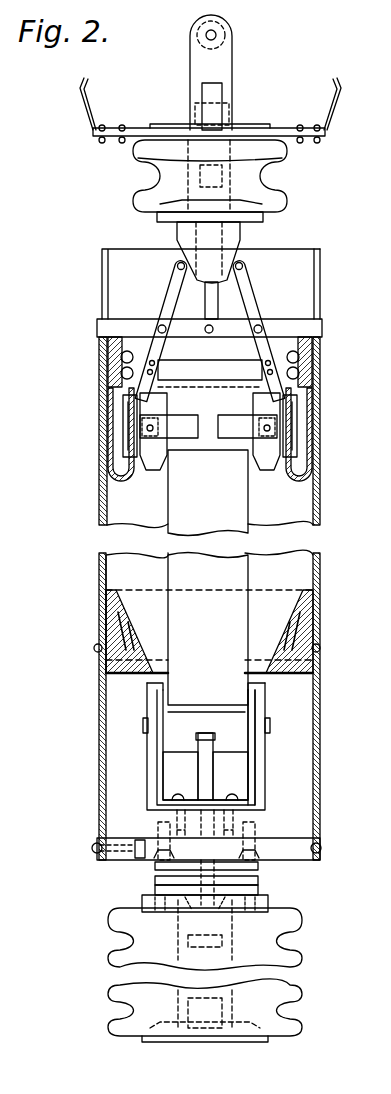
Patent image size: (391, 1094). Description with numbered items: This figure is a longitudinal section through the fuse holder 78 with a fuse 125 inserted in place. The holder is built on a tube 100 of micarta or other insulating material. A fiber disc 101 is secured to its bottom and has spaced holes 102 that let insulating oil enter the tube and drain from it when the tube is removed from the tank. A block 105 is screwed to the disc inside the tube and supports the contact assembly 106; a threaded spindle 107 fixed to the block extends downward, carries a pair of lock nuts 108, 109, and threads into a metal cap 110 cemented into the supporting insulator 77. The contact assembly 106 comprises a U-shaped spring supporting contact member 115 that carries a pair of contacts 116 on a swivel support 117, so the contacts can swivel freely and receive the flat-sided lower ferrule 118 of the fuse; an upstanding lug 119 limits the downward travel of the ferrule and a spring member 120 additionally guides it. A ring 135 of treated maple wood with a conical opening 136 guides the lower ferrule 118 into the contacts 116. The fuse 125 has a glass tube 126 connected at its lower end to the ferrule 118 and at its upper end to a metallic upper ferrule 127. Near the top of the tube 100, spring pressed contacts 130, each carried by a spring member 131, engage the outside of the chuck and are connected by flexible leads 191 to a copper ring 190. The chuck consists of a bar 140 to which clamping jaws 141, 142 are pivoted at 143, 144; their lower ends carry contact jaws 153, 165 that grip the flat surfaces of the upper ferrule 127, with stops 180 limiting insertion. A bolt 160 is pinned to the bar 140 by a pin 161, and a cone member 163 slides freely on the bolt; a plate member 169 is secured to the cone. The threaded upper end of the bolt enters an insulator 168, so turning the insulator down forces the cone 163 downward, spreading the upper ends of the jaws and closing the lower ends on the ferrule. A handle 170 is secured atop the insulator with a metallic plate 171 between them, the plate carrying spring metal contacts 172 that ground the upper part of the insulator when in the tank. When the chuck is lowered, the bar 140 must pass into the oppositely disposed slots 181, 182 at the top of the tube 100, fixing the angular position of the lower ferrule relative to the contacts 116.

The handle 170 is at (234, 42).
The spring metal contacts 172 is at (84, 84).
The metallic plate 171 is at (105, 138).
The insulator 168 is at (160, 183).
The plate member 169 is at (252, 219).
The cone member 163 is at (190, 232).
The slot 182 is at (105, 266).
The slot 181 is at (317, 282).
The bar 140 is at (312, 330).
The bolt 160 is at (203, 293).
The pin 161 is at (213, 328).
The clamping jaw 141 is at (175, 268).
The clamping jaw 142 is at (247, 277).
The pivot 143 is at (163, 325).
The pivot 144 is at (261, 326).
The copper ring 190 is at (107, 368).
The fuse holder 78 is at (100, 493).
The stops 180 is at (258, 363).
The upper ferrule 127 is at (200, 392).
The spring pressed contacts 130 is at (283, 413).
The spring member 131 is at (123, 443).
The flexible leads 191 is at (110, 465).
The contact jaw 165 is at (153, 470).
The contact jaw 153 is at (272, 470).
The tube 126 is at (175, 511).
The tube 100 is at (315, 777).
The fuse 125 is at (160, 572).
The conical opening 136 is at (297, 603).
The ring 135 is at (315, 618).
The contact assembly 106 is at (287, 775).
The contacts 116 is at (170, 689).
The lower ferrule 118 is at (202, 713).
The swivel support 117 is at (254, 727).
The U-shaped spring supporting contact member 115 is at (263, 762).
The spring member 120 is at (197, 740).
The upstanding lug 119 is at (195, 775).
The fiber disc 101 is at (297, 843).
The block 105 is at (252, 834).
The holes 102 is at (142, 838).
The lock nut 108 is at (260, 875).
The threaded spindle 107 is at (157, 880).
The lock nut 109 is at (257, 889).
The metal cap 110 is at (270, 903).
The supporting insulator 77 is at (290, 960).